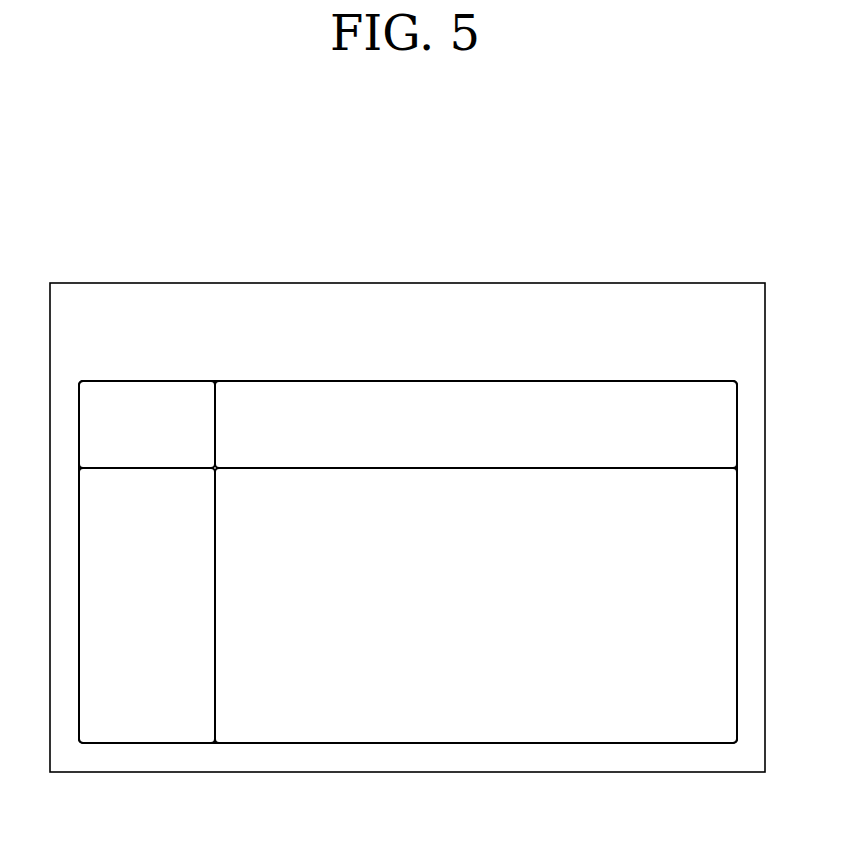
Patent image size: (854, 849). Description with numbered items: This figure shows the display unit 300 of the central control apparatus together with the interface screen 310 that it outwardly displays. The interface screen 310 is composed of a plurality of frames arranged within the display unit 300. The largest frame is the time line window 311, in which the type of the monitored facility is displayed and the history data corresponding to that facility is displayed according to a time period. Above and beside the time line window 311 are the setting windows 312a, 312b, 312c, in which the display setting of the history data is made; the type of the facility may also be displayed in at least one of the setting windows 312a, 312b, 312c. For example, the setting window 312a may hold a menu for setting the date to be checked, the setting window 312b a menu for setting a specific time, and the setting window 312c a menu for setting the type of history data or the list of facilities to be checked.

The display unit 300 is at (561, 283).
The interface screen 310 is at (477, 381).
The time line window 311 is at (496, 619).
The setting window 312a is at (174, 441).
The setting window 312b is at (503, 441).
The setting window 312c is at (174, 620).